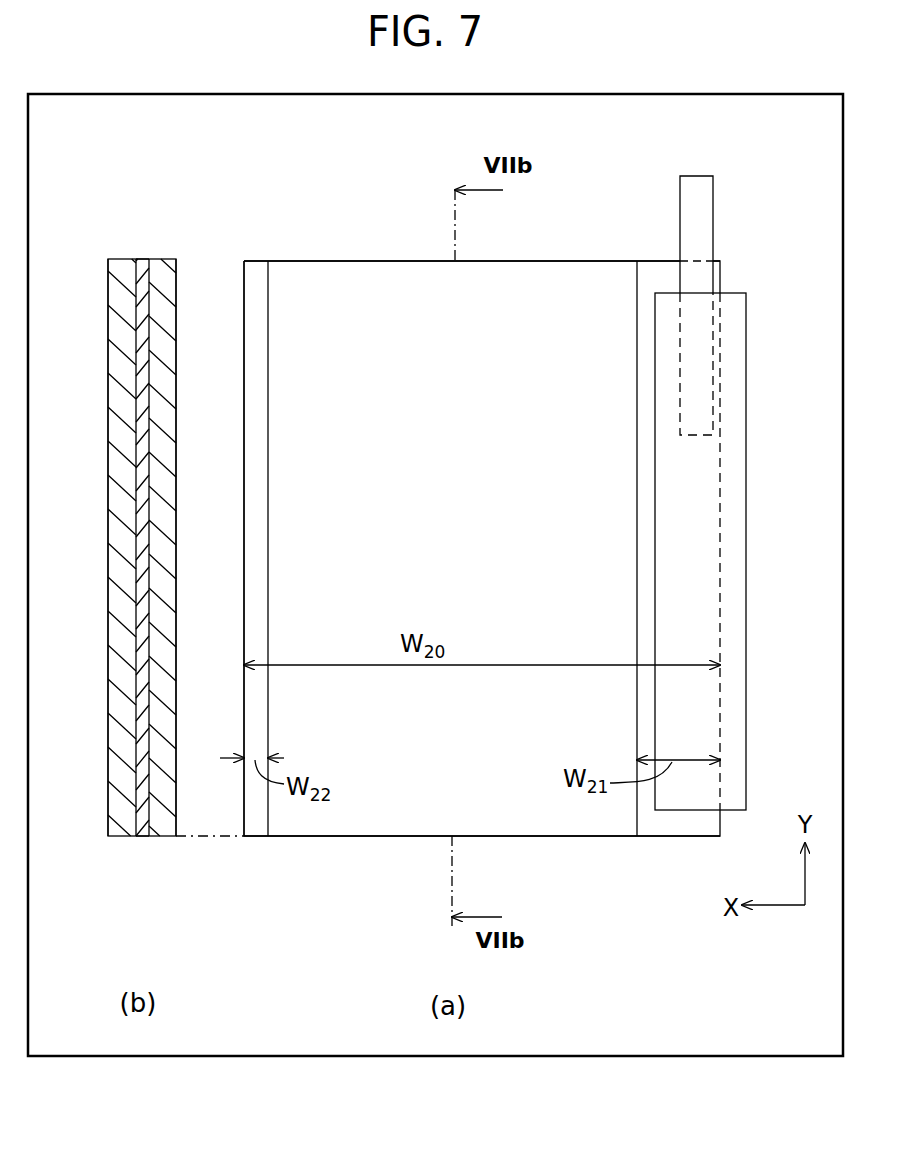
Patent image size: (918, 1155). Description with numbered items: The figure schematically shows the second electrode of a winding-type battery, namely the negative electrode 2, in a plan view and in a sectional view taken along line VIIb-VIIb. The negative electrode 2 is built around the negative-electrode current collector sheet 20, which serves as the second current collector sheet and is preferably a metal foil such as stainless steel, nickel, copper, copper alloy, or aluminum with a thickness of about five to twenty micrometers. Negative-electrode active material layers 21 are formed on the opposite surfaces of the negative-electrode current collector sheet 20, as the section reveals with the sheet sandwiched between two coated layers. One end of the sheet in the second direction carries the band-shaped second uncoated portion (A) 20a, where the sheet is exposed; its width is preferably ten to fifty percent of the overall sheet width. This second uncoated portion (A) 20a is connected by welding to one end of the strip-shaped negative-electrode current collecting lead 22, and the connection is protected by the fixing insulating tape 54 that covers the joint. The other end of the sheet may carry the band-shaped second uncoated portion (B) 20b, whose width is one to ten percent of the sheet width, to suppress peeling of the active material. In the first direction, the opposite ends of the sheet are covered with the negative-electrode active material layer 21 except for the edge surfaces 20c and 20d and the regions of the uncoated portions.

The negative electrode 2 is at (361, 152).
The negative-electrode current collector sheet 20 is at (143, 684).
The second uncoated portion (A) 20a is at (668, 837).
The second uncoated portion (B) 20b is at (252, 837).
The edge surface 20c is at (146, 256).
The edge surface 20d is at (139, 840).
The negative-electrode active material layer 21 is at (120, 828).
The negative-electrode current collecting lead 22 is at (693, 218).
The insulating tape 54 is at (733, 406).